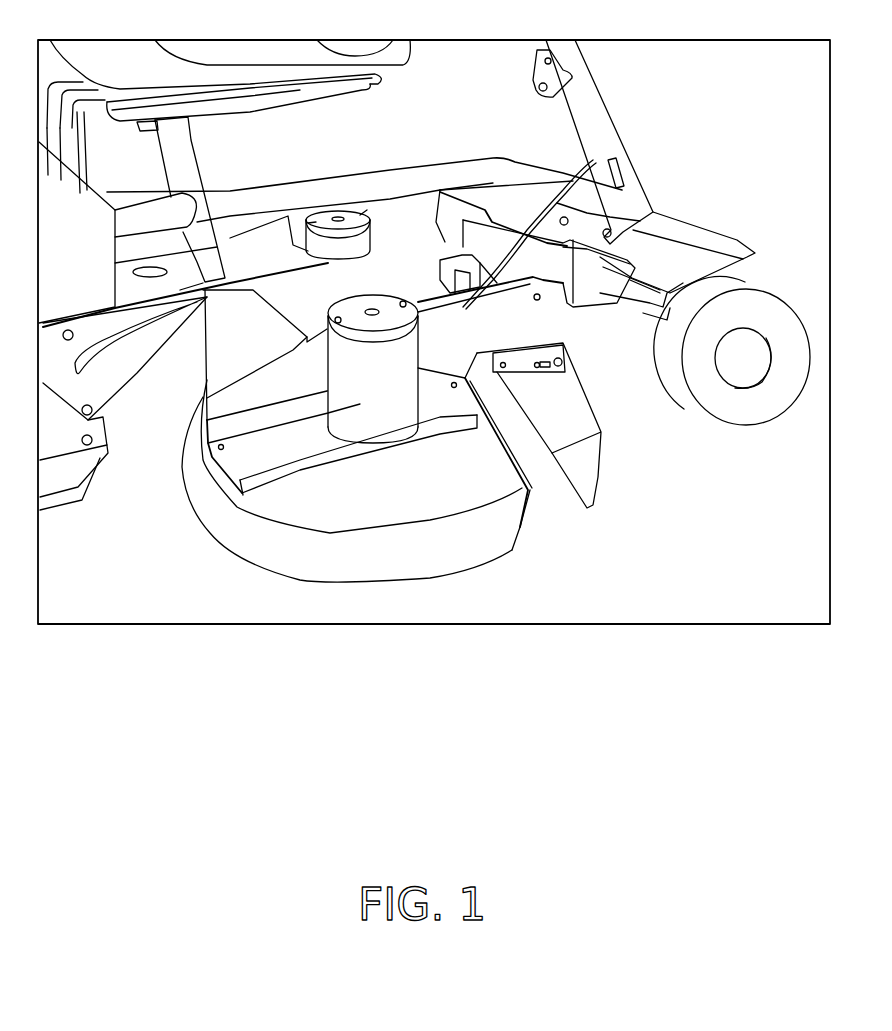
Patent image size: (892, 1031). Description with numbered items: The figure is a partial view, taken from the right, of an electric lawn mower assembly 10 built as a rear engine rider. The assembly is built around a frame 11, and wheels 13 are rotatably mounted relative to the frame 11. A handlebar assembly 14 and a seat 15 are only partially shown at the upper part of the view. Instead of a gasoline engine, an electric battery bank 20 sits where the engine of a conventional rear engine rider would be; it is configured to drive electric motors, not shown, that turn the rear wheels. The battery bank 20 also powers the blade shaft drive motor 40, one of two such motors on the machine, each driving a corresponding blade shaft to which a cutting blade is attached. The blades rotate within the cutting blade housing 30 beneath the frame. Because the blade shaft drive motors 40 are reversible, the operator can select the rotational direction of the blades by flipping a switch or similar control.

The lawn mower assembly 10 is at (343, 663).
The frame 11 is at (373, 185).
The wheels 13 is at (730, 408).
The handlebar assembly 14 is at (548, 50).
The seat 15 is at (247, 72).
The electric battery bank 20 is at (88, 270).
The cutting blade housing 30 is at (406, 564).
The blade shaft drive motor 40 is at (384, 390).